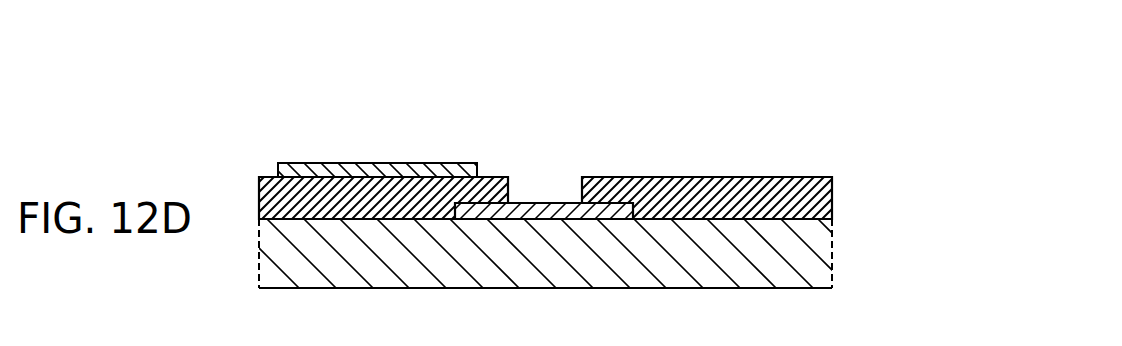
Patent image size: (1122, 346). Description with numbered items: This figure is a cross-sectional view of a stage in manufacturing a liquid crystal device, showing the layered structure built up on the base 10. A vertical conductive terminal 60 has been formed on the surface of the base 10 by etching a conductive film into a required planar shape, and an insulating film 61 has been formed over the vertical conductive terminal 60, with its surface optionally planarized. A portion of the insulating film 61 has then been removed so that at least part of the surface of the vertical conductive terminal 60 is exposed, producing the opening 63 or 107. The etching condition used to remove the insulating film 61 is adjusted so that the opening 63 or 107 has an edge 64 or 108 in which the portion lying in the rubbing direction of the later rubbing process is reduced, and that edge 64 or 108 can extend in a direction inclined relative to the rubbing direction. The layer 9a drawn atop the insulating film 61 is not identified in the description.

The base 10 is at (808, 258).
The insulating film 61 is at (563, 143).
The vertical conductive terminal 60 is at (653, 178).
The opening 107 is at (550, 155).
The opening 63 is at (582, 193).
The edge 64 is at (390, 143).
The edge 108 is at (510, 176).
The upper electrode 9a is at (310, 163).